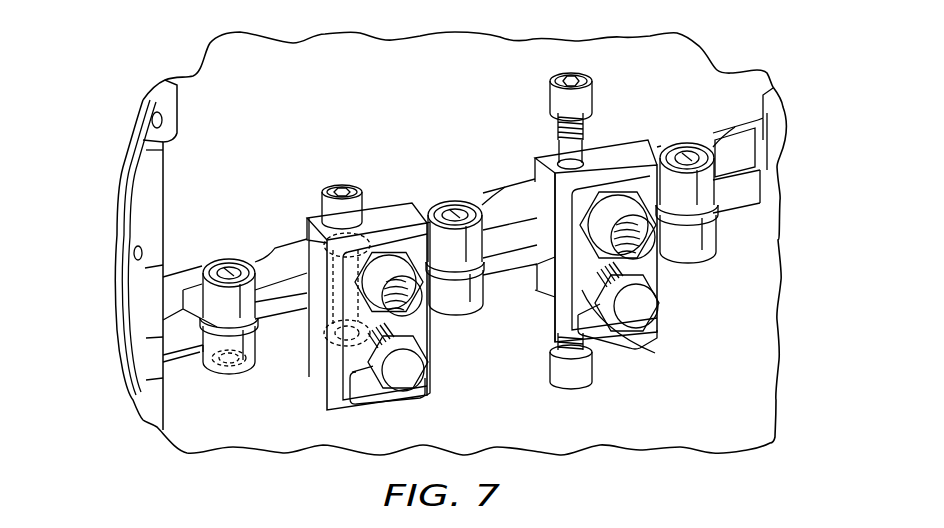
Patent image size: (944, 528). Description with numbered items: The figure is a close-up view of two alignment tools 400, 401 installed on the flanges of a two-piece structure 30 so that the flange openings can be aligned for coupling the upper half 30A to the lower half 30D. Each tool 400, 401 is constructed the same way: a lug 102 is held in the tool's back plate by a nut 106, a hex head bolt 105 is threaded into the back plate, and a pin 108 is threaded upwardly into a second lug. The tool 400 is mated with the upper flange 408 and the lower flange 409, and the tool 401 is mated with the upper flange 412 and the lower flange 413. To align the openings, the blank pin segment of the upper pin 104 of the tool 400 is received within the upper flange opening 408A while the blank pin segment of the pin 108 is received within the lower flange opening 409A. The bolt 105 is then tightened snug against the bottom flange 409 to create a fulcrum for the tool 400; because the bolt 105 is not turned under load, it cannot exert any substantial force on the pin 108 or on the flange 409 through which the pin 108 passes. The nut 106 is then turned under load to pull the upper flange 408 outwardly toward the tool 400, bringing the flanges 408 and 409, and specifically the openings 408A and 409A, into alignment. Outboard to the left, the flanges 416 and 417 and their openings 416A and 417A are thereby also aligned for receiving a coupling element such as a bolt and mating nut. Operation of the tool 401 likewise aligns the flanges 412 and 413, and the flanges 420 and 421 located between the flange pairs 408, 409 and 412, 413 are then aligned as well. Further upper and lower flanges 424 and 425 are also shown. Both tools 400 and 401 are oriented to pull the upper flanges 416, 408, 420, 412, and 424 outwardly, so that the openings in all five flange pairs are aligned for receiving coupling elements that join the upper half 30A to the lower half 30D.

The frame member 30 is at (230, 62).
The upper half 30A is at (682, 56).
The lower half 30D is at (182, 387).
The lug 102 is at (593, 150).
The pin 104 is at (590, 86).
The bolt 105 is at (408, 373).
The nut 106 is at (392, 262).
The pin 108 is at (592, 379).
The alignment tool 400 is at (383, 406).
The alignment tool 401 is at (650, 352).
The upper flange 408 is at (300, 262).
The upper flange opening 408A is at (307, 210).
The lower flange 409 is at (314, 318).
The lower flange opening 409A is at (321, 345).
The upper flange 412 is at (530, 195).
The lower flange 413 is at (545, 265).
The flange 416 is at (257, 280).
The opening 416A is at (228, 272).
The flange 417 is at (207, 345).
The opening 417A is at (233, 366).
The upper flange 420 is at (490, 214).
The lower flange 421 is at (468, 300).
The upper flange 424 is at (707, 190).
The lower flange 425 is at (710, 237).